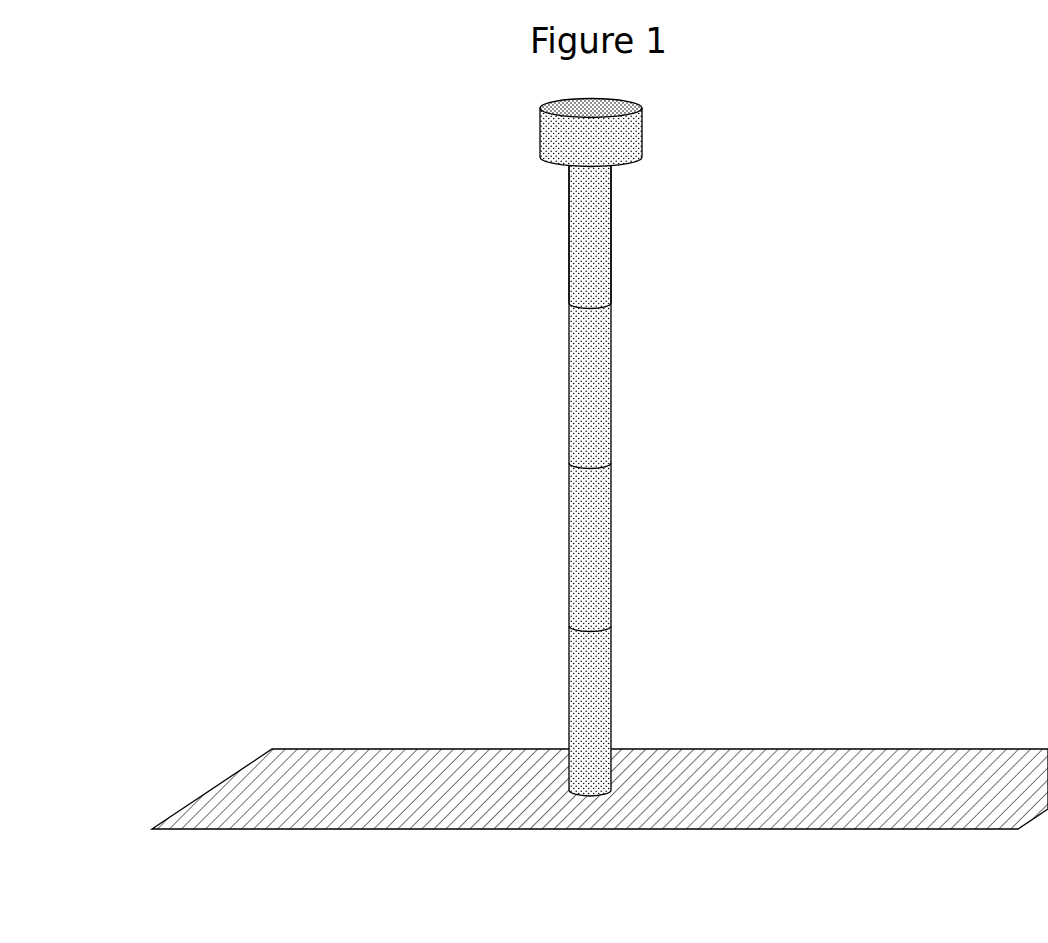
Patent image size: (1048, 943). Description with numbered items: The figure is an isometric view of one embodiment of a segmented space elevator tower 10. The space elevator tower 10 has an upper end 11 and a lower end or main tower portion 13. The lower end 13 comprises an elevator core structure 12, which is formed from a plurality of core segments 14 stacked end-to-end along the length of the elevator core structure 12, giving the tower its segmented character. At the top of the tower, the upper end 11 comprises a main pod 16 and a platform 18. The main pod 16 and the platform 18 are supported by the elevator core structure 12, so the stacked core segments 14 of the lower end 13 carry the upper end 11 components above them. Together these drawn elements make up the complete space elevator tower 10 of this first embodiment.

The segmented space elevator tower 10 is at (430, 443).
The upper end 11 is at (518, 92).
The elevator core structure 12 is at (614, 300).
The lower end or main tower portion 13 is at (518, 158).
The core segments 14 is at (594, 243).
The main pod 16 is at (605, 142).
The platform 18 is at (607, 106).